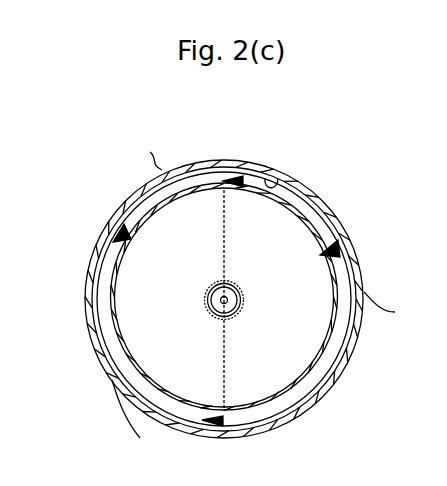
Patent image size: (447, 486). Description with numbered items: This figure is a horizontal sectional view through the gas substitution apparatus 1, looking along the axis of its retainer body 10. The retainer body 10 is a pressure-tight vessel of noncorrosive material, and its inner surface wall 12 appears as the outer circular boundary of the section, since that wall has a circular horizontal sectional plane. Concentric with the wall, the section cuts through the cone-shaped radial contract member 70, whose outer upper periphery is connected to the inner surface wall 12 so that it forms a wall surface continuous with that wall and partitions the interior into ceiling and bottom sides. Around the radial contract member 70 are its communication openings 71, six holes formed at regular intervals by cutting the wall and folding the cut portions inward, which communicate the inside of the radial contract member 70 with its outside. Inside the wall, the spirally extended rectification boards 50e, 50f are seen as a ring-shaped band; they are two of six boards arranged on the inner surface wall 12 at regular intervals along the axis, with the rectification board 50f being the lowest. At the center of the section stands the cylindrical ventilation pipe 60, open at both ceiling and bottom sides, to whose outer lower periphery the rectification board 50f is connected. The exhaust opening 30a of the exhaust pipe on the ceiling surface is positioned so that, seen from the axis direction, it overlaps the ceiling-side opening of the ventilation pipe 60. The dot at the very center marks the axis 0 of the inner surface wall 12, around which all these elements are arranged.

The gas substitution apparatus 1 is at (110, 73).
The retainer body 10 is at (98, 157).
The inner surface wall 12 is at (280, 178).
The radial contract member 70 is at (304, 217).
The communication opening 71 is at (260, 296).
The rectification board 50e is at (287, 362).
The rectification board 50f is at (140, 291).
The exhaust opening 30a is at (222, 297).
The ventilation pipe 60 is at (210, 312).
The rotation center 0 is at (238, 314).